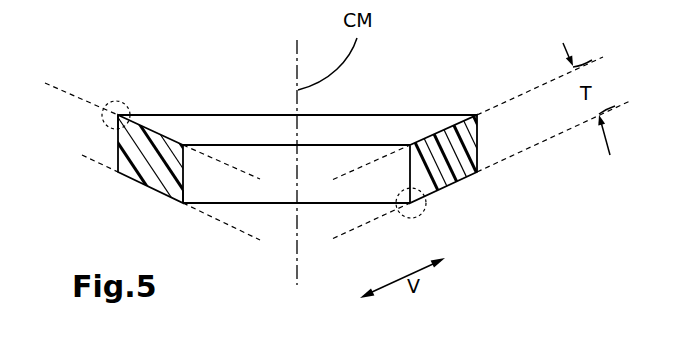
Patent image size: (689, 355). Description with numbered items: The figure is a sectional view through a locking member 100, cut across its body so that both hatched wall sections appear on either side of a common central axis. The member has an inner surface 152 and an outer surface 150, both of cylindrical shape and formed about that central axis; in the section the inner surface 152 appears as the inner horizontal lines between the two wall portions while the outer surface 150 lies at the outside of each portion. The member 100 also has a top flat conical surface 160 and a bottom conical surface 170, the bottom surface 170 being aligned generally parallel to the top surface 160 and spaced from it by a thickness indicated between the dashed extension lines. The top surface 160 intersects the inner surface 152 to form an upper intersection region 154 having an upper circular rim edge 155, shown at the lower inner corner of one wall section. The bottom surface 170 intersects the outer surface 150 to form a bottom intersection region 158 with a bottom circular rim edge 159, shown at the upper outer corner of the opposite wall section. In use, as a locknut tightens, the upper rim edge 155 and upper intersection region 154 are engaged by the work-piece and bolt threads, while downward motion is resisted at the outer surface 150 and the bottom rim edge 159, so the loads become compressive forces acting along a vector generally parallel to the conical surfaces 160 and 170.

The locking member 100 is at (509, 113).
The outer surface 150 is at (117, 158).
The inner surface 152 is at (400, 171).
The upper intersection region 154 is at (407, 219).
The upper circular rim edge 155 is at (182, 205).
The bottom intersection region 158 is at (112, 102).
The bottom circular rim edge 159 is at (118, 116).
The top flat conical surface 160 is at (452, 185).
The bottom conical surface 170 is at (148, 137).